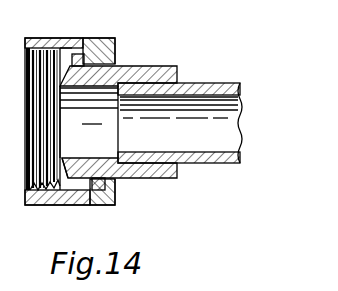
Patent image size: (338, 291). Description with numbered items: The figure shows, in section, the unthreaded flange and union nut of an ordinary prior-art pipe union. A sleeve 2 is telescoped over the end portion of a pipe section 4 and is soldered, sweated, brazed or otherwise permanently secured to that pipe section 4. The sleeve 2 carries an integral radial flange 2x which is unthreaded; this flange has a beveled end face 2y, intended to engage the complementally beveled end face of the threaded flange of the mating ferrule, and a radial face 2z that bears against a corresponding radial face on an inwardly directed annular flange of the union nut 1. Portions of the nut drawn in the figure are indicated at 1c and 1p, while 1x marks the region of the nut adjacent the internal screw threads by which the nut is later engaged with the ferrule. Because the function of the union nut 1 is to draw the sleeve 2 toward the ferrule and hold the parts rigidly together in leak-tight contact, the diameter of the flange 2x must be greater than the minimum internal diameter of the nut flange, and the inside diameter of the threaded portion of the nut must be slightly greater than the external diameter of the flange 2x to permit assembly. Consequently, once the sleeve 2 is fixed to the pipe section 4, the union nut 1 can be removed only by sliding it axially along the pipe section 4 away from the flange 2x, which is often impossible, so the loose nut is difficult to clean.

The union nut 1 is at (68, 200).
The nut top flange 1c is at (74, 53).
The nut bottom flange 1p is at (116, 192).
The internal thread of nut 1x is at (38, 180).
The sleeve 2 is at (156, 74).
The radial flange 2x is at (73, 54).
The beveled end face 2y is at (61, 175).
The radial face 2z is at (100, 191).
The pipe section 4 is at (205, 83).